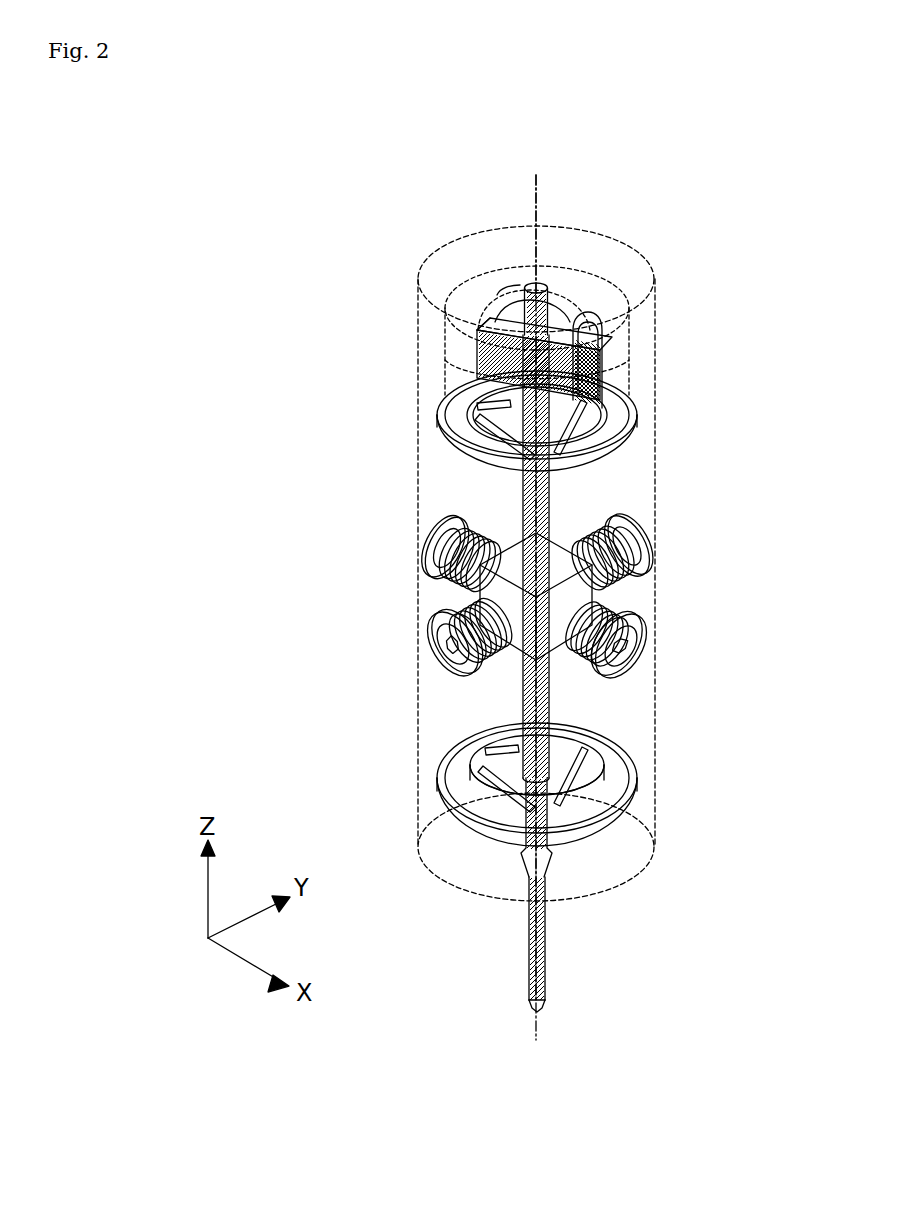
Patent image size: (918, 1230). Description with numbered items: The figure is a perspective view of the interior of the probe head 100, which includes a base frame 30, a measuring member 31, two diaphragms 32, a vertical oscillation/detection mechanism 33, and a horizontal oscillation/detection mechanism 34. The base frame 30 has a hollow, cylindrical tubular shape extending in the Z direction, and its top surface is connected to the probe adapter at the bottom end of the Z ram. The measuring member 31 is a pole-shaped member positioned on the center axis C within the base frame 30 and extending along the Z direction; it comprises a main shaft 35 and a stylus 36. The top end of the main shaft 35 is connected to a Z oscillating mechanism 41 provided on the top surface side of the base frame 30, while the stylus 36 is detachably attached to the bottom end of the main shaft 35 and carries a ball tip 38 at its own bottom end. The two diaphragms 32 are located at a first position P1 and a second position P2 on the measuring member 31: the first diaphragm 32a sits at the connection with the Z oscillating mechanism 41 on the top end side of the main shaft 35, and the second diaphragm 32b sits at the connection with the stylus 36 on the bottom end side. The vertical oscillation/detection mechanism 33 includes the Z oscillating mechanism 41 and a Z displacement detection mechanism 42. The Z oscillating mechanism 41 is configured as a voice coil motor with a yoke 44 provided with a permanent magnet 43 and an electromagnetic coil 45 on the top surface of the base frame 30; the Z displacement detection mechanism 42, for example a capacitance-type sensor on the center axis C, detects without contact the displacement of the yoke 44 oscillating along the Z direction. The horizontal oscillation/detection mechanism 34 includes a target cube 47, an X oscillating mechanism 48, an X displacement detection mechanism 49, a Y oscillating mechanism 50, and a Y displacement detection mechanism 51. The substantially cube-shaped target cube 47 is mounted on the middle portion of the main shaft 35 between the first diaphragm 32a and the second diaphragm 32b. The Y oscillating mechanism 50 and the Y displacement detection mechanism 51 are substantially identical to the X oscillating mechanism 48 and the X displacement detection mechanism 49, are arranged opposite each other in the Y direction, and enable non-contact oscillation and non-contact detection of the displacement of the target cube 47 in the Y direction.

The probe head 100 is at (570, 160).
The center axis C is at (536, 185).
The base frame 30 is at (658, 440).
The measuring member 31 is at (550, 495).
The diaphragms 32 is at (640, 416).
The first diaphragm 32a is at (537, 415).
The second diaphragm 32b is at (640, 772).
The vertical oscillation/detection mechanism 33 is at (500, 277).
The horizontal oscillation/detection mechanism 34 is at (441, 598).
The main shaft 35 is at (556, 735).
The stylus 36 is at (548, 940).
The ball tip 38 is at (548, 1000).
The Z oscillating mechanism 41 is at (348, 283).
The Z displacement detection mechanism 42 is at (540, 290).
The permanent magnet 43 is at (598, 360).
The yoke 44 is at (480, 355).
The electromagnetic coil 45 is at (470, 305).
The target cube 47 is at (500, 542).
The X oscillating mechanism 48 is at (432, 540).
The X displacement detection mechanism 49 is at (640, 633).
The Y oscillating mechanism 50 is at (428, 633).
The Y displacement detection mechanism 51 is at (640, 541).
The first position P1 is at (447, 412).
The second position P2 is at (485, 755).